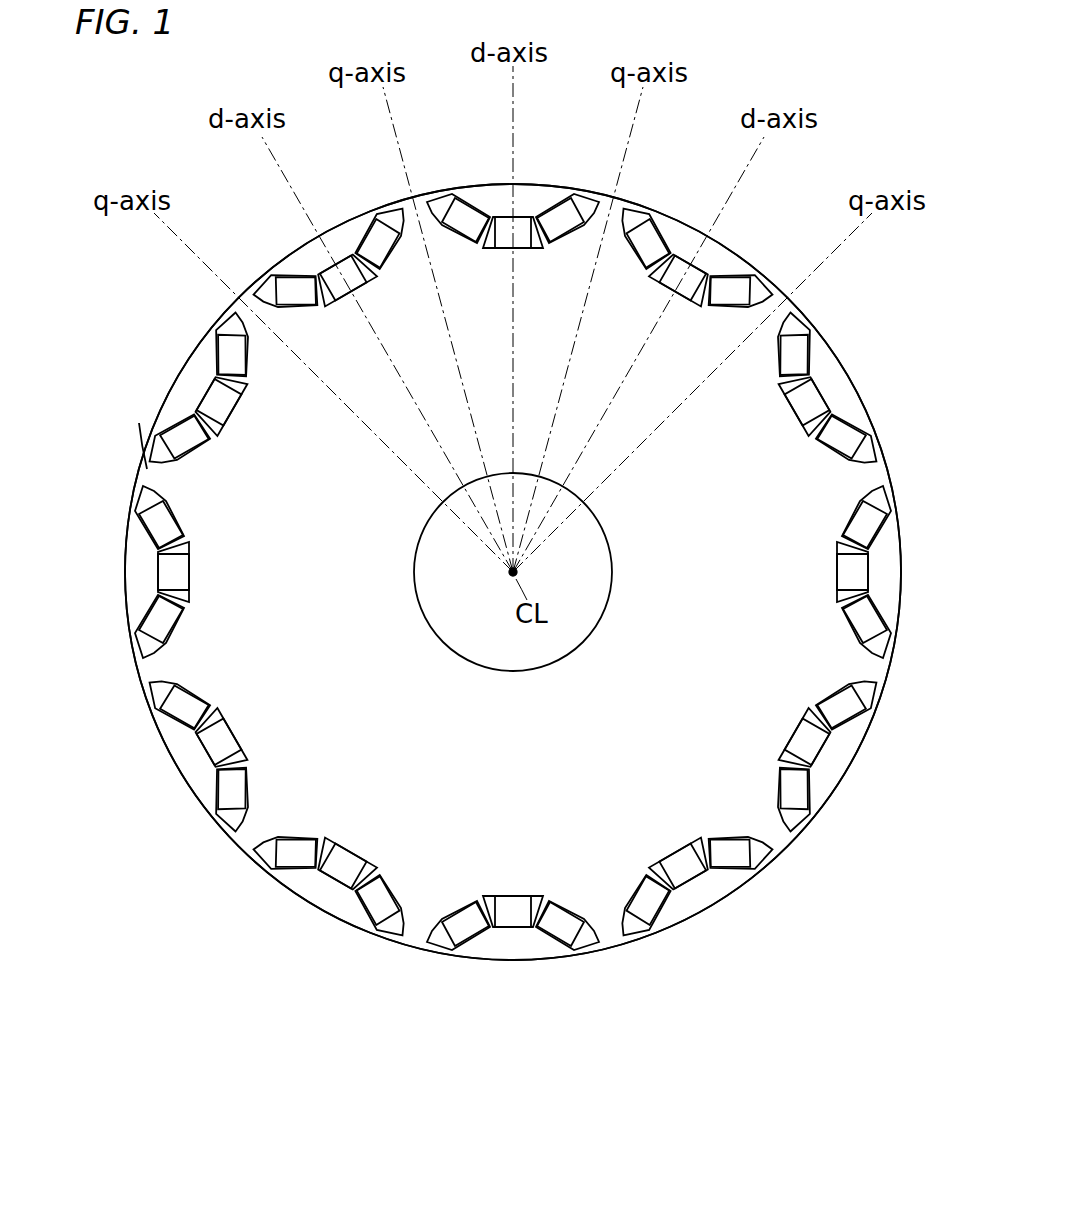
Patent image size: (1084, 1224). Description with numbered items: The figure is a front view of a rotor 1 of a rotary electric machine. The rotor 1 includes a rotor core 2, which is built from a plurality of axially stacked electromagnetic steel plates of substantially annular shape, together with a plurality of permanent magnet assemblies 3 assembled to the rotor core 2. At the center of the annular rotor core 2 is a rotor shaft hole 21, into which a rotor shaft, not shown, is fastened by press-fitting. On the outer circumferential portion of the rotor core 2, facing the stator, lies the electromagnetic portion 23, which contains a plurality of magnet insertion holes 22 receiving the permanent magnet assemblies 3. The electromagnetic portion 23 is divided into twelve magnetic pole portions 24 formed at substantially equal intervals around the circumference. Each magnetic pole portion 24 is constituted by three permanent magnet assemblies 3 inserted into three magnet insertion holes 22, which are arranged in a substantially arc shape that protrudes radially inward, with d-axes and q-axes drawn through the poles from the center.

The rotor 1 is at (878, 118).
The rotor core 2 is at (895, 470).
The permanent magnet assembly 3 is at (513, 568).
The rotor shaft hole 21 is at (417, 593).
The magnet insertion hole 22 is at (513, 572).
The electromagnetic portion 23 is at (200, 495).
The magnetic pole portion 24 is at (464, 536).